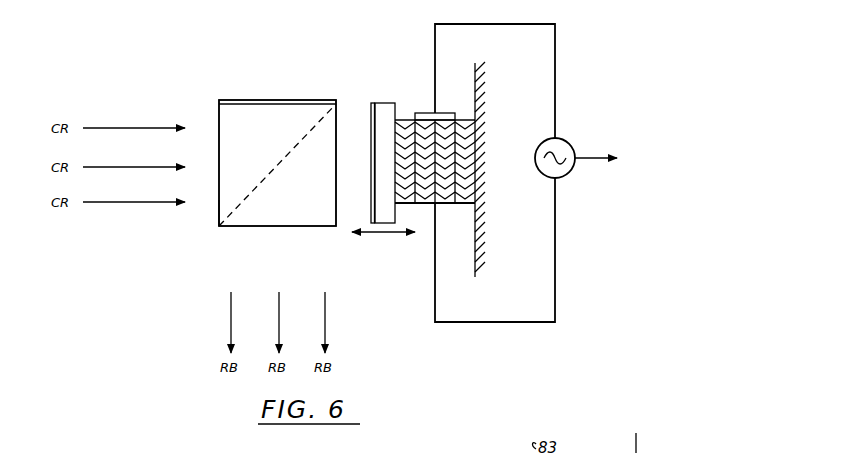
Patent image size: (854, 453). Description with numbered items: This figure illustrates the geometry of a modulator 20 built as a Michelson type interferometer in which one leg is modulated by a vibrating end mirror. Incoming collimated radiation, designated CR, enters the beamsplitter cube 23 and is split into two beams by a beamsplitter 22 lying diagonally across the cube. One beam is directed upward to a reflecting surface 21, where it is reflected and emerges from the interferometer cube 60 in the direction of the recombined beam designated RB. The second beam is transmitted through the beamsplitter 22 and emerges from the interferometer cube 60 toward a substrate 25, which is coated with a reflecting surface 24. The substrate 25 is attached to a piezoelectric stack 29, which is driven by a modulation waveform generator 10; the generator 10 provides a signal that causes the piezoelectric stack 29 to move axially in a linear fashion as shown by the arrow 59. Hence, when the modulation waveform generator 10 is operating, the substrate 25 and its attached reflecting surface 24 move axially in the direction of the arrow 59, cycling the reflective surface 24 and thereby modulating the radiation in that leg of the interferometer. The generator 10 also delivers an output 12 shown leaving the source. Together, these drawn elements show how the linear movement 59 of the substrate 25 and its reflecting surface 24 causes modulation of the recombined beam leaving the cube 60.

The modulation waveform generator 10 is at (568, 170).
The output signal 12 is at (587, 155).
The optical modulator assembly 20 is at (213, 58).
The reflecting surface 21 is at (253, 99).
The beamsplitter 22 is at (253, 191).
The beamsplitter cube 23 is at (217, 209).
The reflecting surface 24 is at (366, 106).
The substrate 25 is at (385, 100).
The piezoelectric stack 29 is at (459, 205).
The arrow 59 is at (380, 232).
The interferometer cube 60 is at (302, 204).